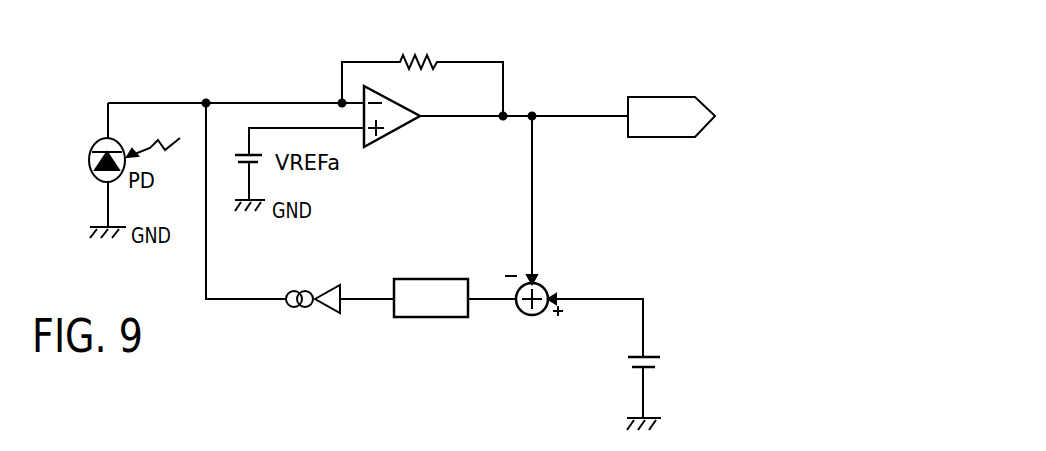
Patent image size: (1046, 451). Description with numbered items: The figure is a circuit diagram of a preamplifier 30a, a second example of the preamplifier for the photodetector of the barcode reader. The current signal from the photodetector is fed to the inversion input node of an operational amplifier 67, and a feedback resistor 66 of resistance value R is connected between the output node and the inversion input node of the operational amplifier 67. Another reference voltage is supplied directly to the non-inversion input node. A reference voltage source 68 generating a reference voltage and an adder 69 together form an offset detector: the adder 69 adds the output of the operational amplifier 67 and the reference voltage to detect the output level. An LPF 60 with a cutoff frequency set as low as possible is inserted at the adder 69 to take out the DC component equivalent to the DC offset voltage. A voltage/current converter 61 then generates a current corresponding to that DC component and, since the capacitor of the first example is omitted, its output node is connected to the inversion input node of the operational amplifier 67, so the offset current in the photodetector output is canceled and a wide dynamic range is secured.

The preamplifier 30a is at (587, 78).
The feedback resistor 66 is at (418, 50).
The operational amplifier 67 is at (379, 149).
The voltage/current converter 61 is at (312, 311).
The LPF 60 is at (428, 276).
The adder 69 is at (544, 286).
The reference voltage source 68 is at (650, 352).